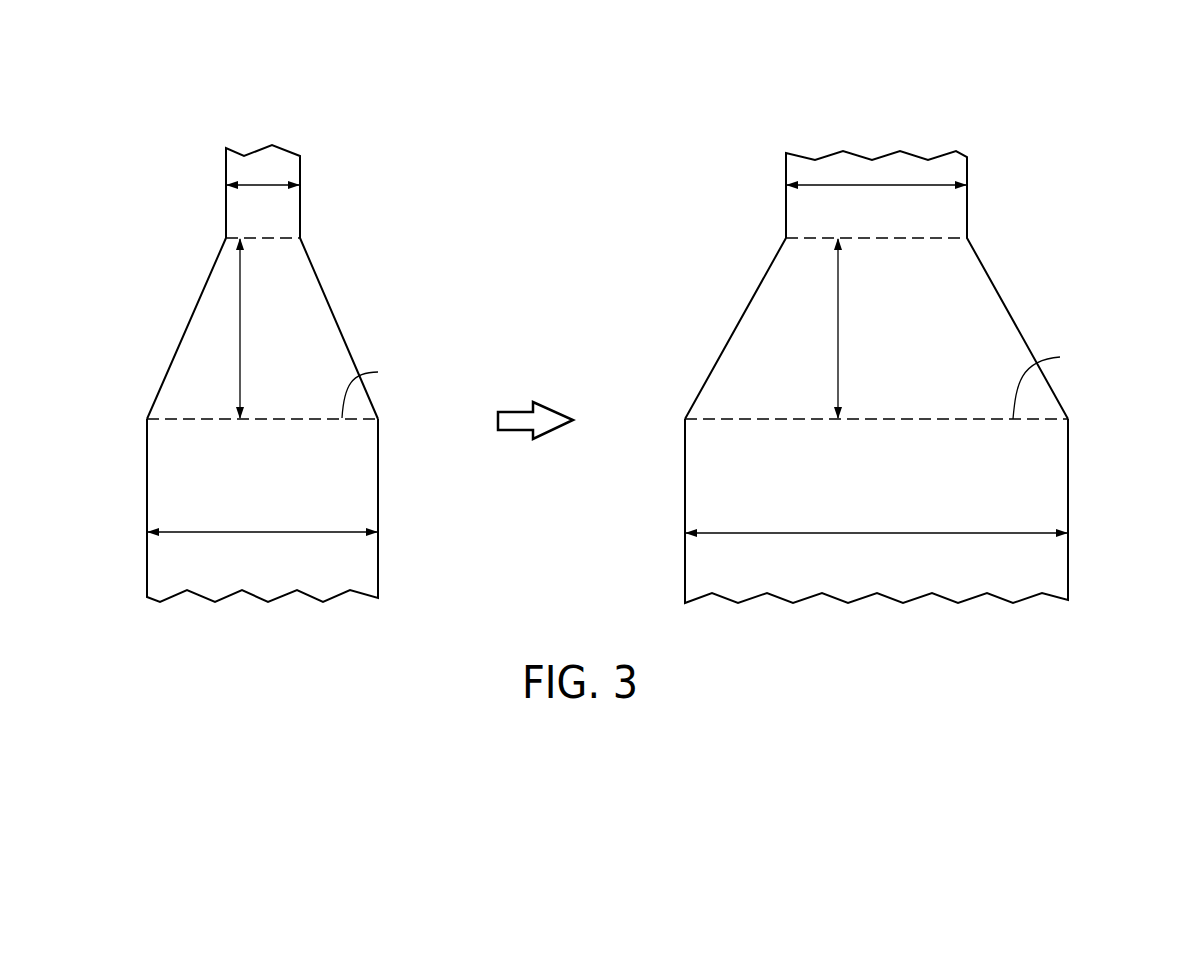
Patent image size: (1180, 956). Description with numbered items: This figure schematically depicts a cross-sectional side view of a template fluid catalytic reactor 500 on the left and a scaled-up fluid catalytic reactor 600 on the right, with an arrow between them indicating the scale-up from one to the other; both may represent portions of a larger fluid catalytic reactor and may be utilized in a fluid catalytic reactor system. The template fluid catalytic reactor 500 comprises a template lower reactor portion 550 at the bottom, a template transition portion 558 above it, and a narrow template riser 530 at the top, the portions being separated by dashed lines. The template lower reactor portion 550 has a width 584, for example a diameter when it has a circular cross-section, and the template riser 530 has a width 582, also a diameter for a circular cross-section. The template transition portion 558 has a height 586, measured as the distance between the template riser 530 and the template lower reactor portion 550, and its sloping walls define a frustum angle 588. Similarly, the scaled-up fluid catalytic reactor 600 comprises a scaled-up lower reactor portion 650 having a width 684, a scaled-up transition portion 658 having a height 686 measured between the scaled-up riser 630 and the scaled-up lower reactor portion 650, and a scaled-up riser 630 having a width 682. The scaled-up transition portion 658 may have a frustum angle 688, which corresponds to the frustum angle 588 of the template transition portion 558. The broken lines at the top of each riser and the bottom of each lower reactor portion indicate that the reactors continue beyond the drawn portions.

The template fluid catalytic reactor 500 is at (498, 162).
The scaled-up fluid catalytic reactor 600 is at (1100, 163).
The template riser 530 is at (226, 192).
The width of template riser 582 is at (276, 185).
The template transition portion 558 is at (186, 328).
The height of template transition portion 586 is at (240, 330).
The frustum angle of template transition portion 588 is at (386, 386).
The template lower reactor portion 550 is at (147, 507).
The width of template lower reactor portion 584 is at (263, 531).
The scaled-up riser 630 is at (786, 195).
The width of scaled-up riser 682 is at (943, 185).
The scaled-up transition portion 658 is at (735, 328).
The height of scaled-up transition portion 686 is at (838, 330).
The frustum angle of scaled-up transition portion 688 is at (1063, 381).
The scaled-up lower reactor portion 650 is at (685, 510).
The width of scaled-up lower reactor portion 684 is at (876, 532).